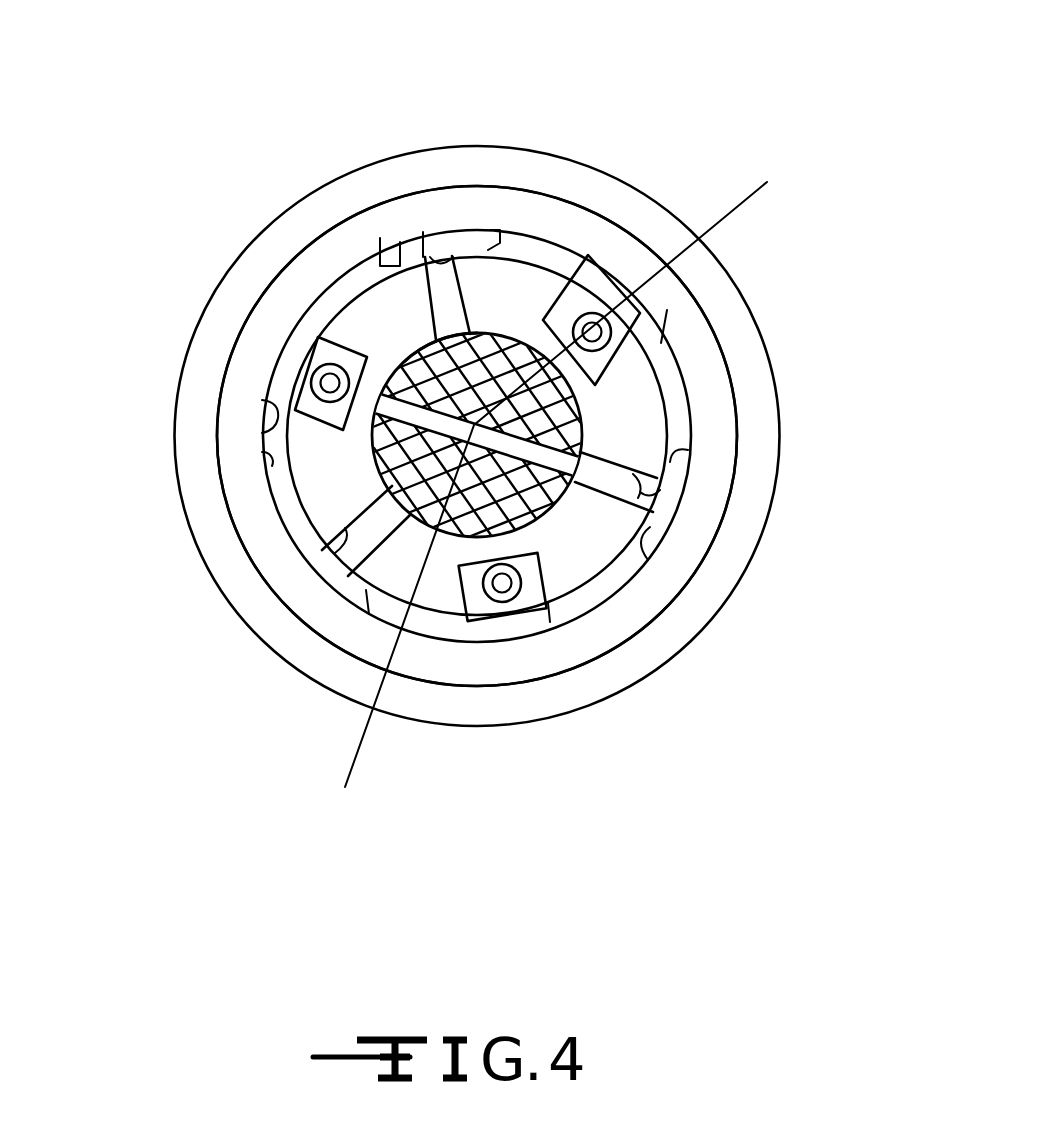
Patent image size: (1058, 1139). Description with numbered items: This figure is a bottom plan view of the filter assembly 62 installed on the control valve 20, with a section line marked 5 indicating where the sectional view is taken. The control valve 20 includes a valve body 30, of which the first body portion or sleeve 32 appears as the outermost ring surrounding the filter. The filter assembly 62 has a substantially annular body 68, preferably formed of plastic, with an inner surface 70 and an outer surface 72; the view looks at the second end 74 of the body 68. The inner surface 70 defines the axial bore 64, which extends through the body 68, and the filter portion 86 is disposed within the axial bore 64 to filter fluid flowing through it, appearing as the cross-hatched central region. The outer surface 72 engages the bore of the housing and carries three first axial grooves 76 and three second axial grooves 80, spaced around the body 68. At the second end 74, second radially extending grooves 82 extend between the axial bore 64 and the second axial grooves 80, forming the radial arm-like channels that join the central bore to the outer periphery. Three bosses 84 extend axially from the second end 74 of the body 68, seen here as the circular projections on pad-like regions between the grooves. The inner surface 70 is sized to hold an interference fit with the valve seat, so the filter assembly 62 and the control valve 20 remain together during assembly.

The control valve 20 is at (466, 421).
The valve body 30 is at (668, 622).
The sleeve 32 is at (685, 683).
The filter assembly 62 is at (548, 212).
The axial bore 64 is at (520, 340).
The annular body 68 is at (330, 282).
The inner surface 70 is at (400, 380).
The outer surface 72 is at (267, 466).
The second end 74 is at (302, 488).
The first axial groove 76 is at (655, 345).
The second axial groove 80 is at (415, 242).
The second radially extending groove 82 is at (457, 263).
The boss 84 is at (612, 338).
The filter portion 86 is at (578, 411).
The section line 5- 5 is at (767, 182).